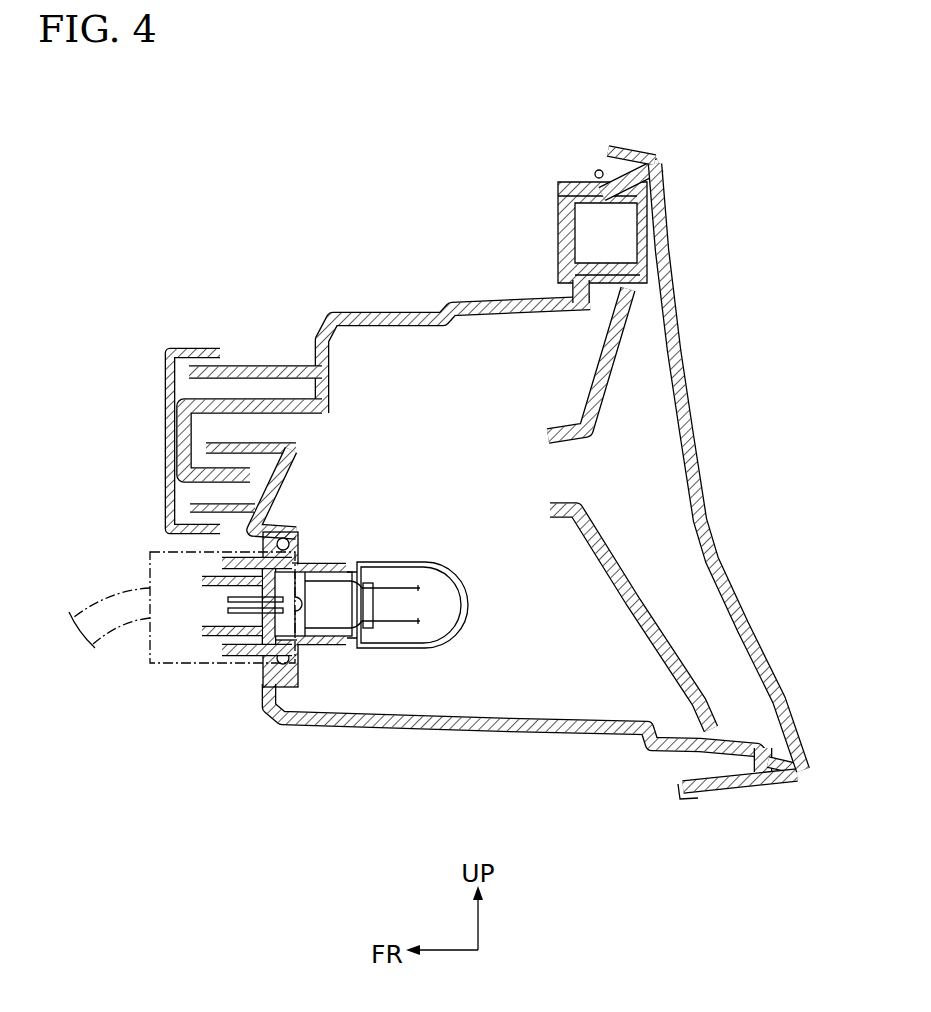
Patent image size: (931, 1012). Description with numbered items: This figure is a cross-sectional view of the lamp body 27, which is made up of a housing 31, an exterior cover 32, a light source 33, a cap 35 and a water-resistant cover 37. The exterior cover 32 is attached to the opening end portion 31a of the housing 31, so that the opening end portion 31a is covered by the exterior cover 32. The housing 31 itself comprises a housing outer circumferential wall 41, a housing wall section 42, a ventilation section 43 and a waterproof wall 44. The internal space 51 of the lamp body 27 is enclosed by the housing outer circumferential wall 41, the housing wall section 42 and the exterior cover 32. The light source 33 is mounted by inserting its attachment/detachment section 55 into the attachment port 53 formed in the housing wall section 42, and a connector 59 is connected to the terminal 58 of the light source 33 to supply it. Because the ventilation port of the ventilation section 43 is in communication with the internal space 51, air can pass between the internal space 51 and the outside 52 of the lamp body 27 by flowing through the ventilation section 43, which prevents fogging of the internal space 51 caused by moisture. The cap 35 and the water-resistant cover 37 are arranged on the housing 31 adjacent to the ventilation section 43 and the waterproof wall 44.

The lamp body 27 is at (363, 280).
The housing 31 is at (437, 305).
The opening end portion 31a is at (597, 171).
The exterior cover 32 is at (689, 418).
The light source 33 is at (389, 662).
The cap 35 is at (200, 398).
The water-resistant cover 37 is at (168, 425).
The housing outer circumferential wall 41 is at (512, 298).
The housing wall section 42 is at (262, 483).
The ventilation section 43 is at (283, 404).
The waterproof wall 44 is at (243, 369).
The internal space 51 is at (448, 479).
The outside 52 is at (153, 227).
The attachment port 53 is at (298, 564).
The attachment/detachment section 55 is at (280, 642).
The terminal 58 is at (237, 610).
The connector 59 is at (150, 650).